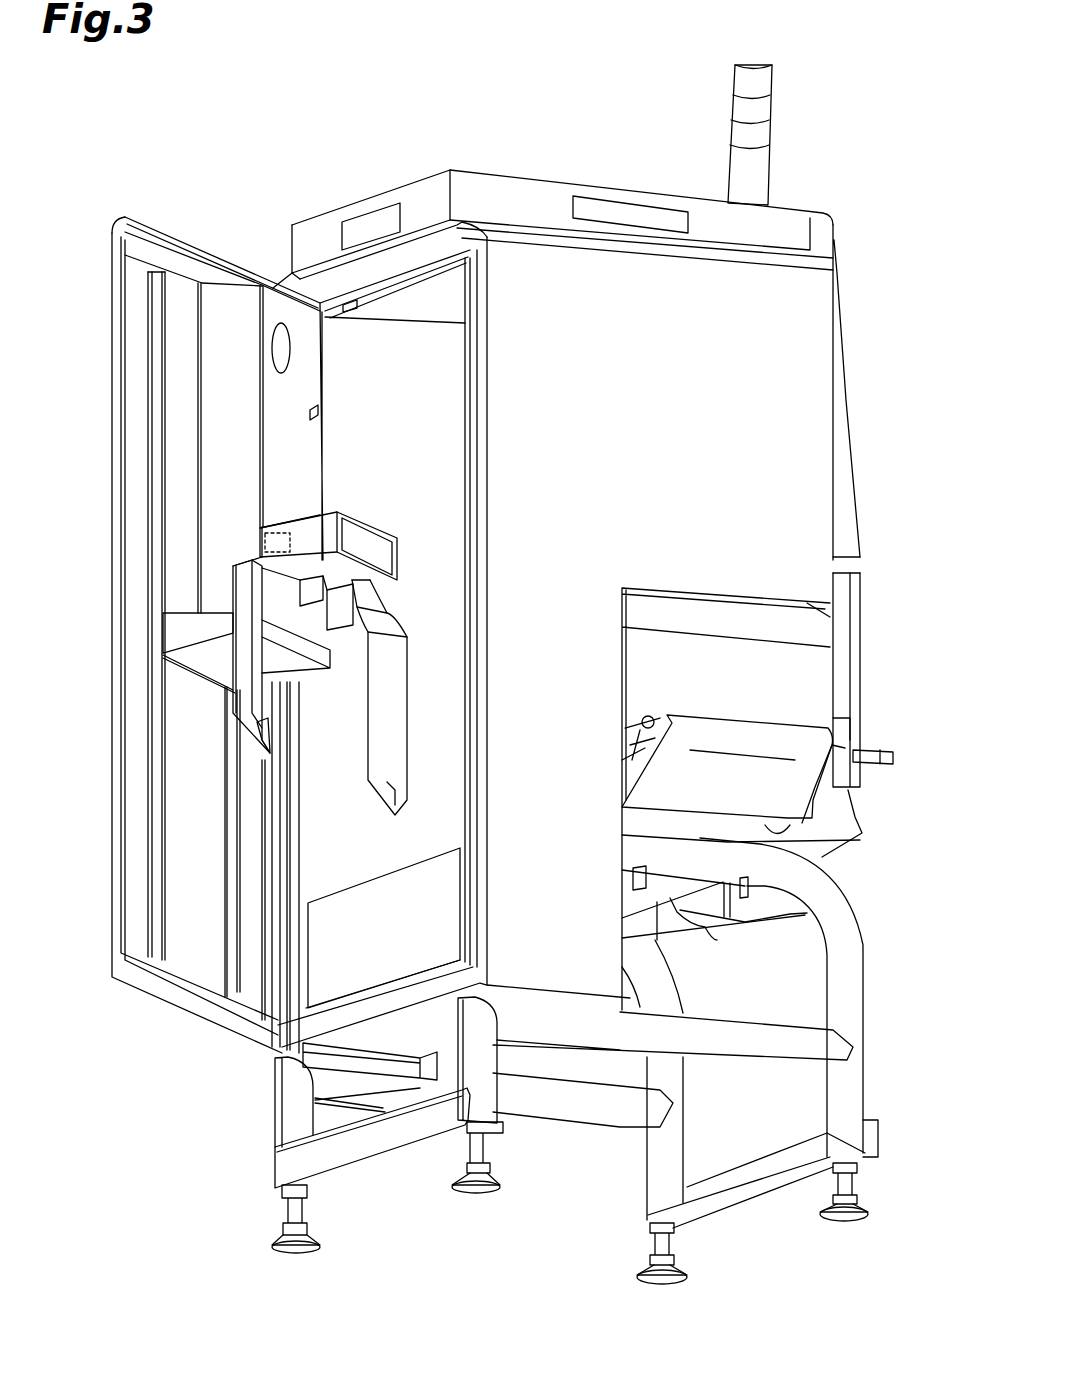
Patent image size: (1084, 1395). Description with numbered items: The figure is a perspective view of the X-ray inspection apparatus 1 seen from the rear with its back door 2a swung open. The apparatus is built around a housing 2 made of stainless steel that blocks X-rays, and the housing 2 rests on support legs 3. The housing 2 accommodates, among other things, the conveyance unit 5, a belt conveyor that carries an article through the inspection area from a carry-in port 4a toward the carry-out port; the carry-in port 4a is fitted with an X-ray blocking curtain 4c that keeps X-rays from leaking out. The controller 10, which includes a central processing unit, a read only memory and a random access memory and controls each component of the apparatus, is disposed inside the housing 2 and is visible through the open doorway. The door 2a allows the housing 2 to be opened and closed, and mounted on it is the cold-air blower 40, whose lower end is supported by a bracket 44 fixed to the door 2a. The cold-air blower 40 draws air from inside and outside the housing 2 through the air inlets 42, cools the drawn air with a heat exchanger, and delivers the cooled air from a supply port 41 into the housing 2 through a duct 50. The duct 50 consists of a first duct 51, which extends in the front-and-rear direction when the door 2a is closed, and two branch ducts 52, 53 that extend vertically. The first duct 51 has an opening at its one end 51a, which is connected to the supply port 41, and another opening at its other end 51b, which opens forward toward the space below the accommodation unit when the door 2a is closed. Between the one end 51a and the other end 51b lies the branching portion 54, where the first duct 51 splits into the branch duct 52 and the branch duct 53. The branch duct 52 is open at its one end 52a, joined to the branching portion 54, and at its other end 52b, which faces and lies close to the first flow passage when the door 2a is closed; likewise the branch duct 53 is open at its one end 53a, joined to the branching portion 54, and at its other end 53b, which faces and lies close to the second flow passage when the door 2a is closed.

The X-ray inspection apparatus 1 is at (848, 146).
The housing 2 is at (762, 372).
The door 2a is at (105, 930).
The support legs 3 is at (287, 1085).
The carry-in port 4a is at (866, 722).
The X-ray blocking curtain 4c is at (803, 688).
The conveyance unit 5 is at (770, 773).
The controller 10 is at (302, 930).
The cold-air blower 40 is at (215, 350).
The supply port 41 is at (262, 522).
The air inlets 42 is at (282, 322).
The bracket 44 is at (222, 648).
The duct 50 is at (408, 558).
The first duct 51 is at (332, 525).
The one end of the first duct 51a is at (275, 530).
The other end of the first duct 51b is at (366, 540).
The branch duct 52 is at (240, 598).
The one end of the branch duct 52a is at (257, 548).
The other end of the branch duct 52b is at (242, 720).
The branch duct 53 is at (377, 690).
The one end of the branch duct 53a is at (383, 605).
The other end of the branch duct 53b is at (387, 800).
The branching portion 54 is at (380, 598).